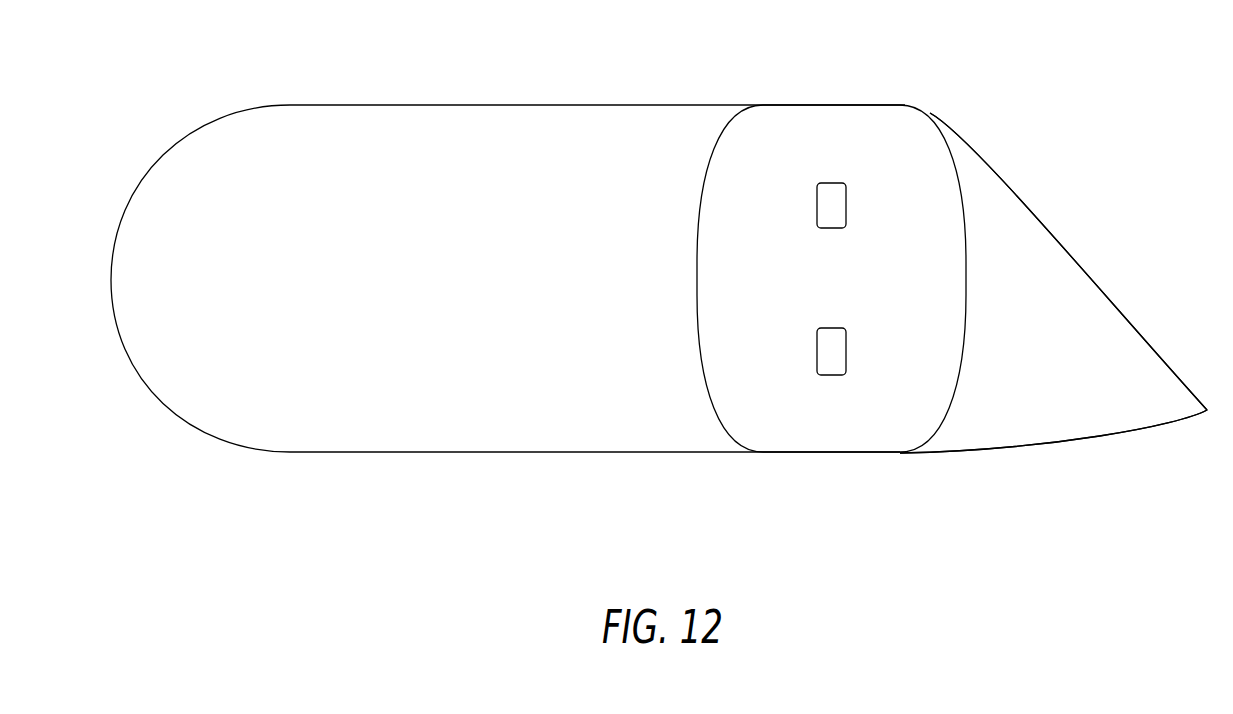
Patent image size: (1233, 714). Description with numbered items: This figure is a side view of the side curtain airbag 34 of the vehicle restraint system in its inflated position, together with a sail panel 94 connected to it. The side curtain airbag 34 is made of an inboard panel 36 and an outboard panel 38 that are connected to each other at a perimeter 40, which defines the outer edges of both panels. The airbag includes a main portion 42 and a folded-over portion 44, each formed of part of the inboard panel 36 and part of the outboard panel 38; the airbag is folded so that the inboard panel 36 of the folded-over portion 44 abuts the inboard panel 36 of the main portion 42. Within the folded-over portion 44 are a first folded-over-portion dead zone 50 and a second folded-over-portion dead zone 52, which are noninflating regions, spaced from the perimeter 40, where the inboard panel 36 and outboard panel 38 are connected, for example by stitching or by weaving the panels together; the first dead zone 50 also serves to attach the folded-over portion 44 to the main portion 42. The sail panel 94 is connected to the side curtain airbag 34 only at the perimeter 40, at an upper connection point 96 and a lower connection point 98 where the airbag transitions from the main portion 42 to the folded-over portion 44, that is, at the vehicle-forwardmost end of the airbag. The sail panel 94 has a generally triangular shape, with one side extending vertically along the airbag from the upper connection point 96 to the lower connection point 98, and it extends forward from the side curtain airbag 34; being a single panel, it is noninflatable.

The side curtain airbag 34 is at (562, 68).
The inboard panel 36 is at (345, 423).
The outboard panel 38 is at (864, 319).
The perimeter 40 is at (135, 192).
The main portion 42 is at (665, 418).
The folded-over portion 44 is at (768, 418).
The first folded-over-portion dead zone 50 is at (846, 197).
The second folded-over-portion dead zone 52 is at (846, 345).
The sail panel 94 is at (1048, 292).
The upper connection point 96 is at (930, 113).
The lower connection point 98 is at (890, 450).